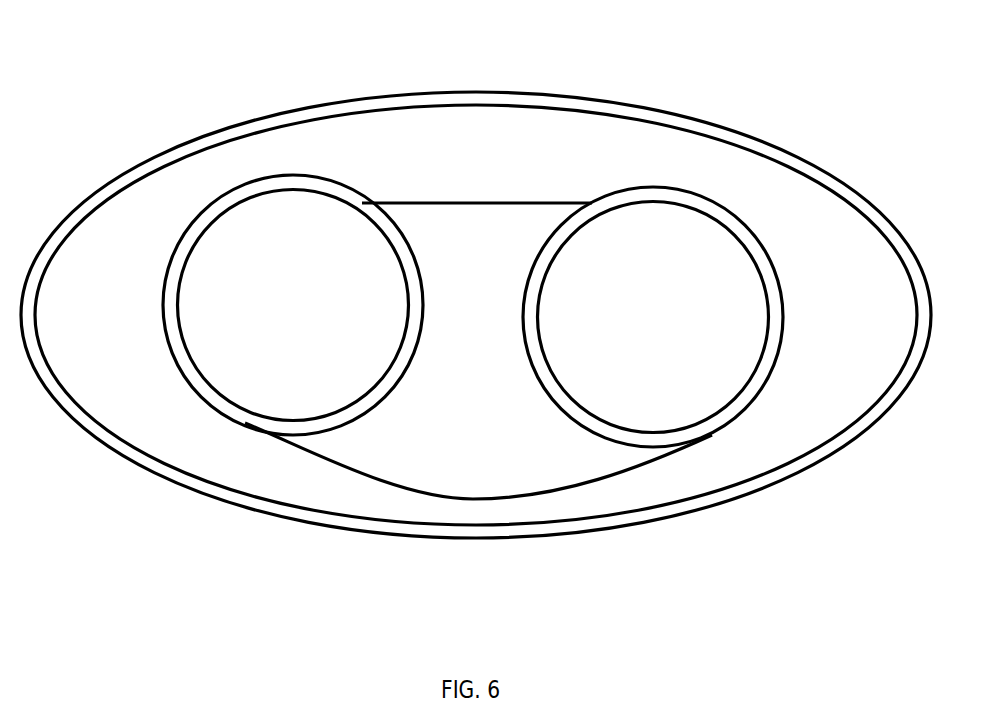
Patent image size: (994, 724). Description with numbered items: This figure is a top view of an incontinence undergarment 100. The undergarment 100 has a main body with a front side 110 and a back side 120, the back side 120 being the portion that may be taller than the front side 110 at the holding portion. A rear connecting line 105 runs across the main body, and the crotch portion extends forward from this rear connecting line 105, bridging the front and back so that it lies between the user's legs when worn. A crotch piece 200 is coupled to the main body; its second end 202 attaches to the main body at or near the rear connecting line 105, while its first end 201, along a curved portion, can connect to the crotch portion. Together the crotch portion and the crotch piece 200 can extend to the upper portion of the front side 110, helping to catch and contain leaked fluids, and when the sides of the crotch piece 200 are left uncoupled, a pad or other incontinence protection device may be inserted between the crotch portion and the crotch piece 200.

The undergarment 100 is at (476, 314).
The front side 110 is at (595, 505).
The back side 120 is at (662, 148).
The rear connecting line 105 is at (537, 203).
The crotch piece 200 is at (473, 314).
The first end 201 is at (483, 500).
The second end 202 is at (493, 203).